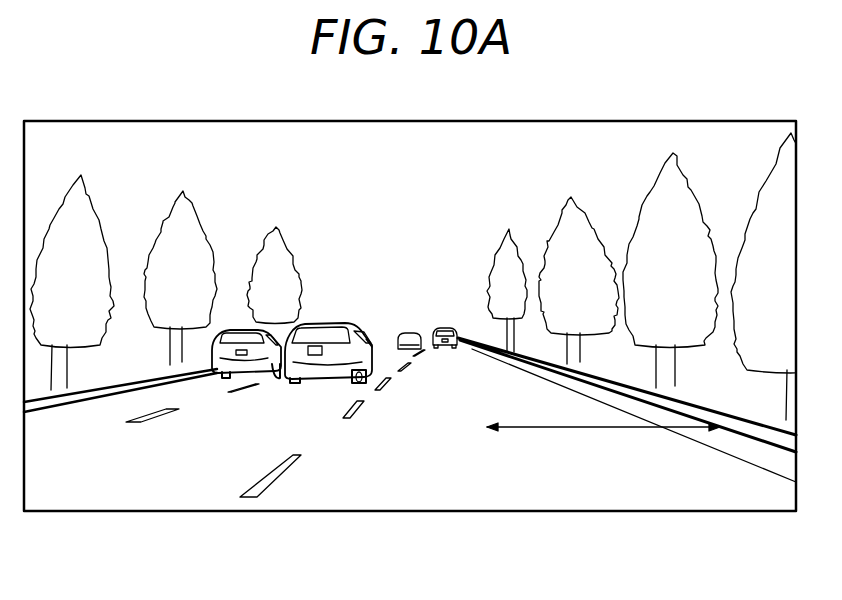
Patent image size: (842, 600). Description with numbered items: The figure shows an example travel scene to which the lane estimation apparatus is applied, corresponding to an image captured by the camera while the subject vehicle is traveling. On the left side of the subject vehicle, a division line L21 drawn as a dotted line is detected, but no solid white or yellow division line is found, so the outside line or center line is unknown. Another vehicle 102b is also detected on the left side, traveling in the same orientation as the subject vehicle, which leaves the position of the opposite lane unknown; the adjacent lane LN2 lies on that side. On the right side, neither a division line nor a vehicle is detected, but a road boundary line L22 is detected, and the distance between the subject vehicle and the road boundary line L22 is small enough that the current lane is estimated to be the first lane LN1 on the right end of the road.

The other vehicle 102b is at (317, 377).
The division line L21 is at (287, 469).
The road boundary line L22 is at (753, 441).
The first lane LN1 is at (551, 487).
The second lane LN2 is at (153, 480).